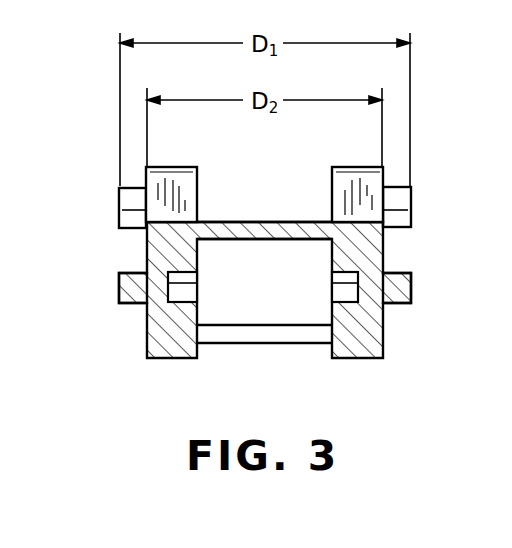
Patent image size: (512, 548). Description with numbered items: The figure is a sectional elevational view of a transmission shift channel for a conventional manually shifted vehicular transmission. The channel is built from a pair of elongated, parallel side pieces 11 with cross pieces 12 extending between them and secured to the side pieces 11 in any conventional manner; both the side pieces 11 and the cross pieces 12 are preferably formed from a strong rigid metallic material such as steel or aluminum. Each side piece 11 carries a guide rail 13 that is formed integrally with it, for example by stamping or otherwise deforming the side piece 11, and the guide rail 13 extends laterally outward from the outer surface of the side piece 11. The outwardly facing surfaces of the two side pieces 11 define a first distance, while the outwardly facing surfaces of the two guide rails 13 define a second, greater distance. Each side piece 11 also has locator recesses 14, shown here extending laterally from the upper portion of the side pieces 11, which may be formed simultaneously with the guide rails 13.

The side pieces 11 is at (158, 243).
The cross pieces 12 is at (255, 225).
The guide rail 13 is at (121, 294).
The locator recesses 14 is at (118, 203).